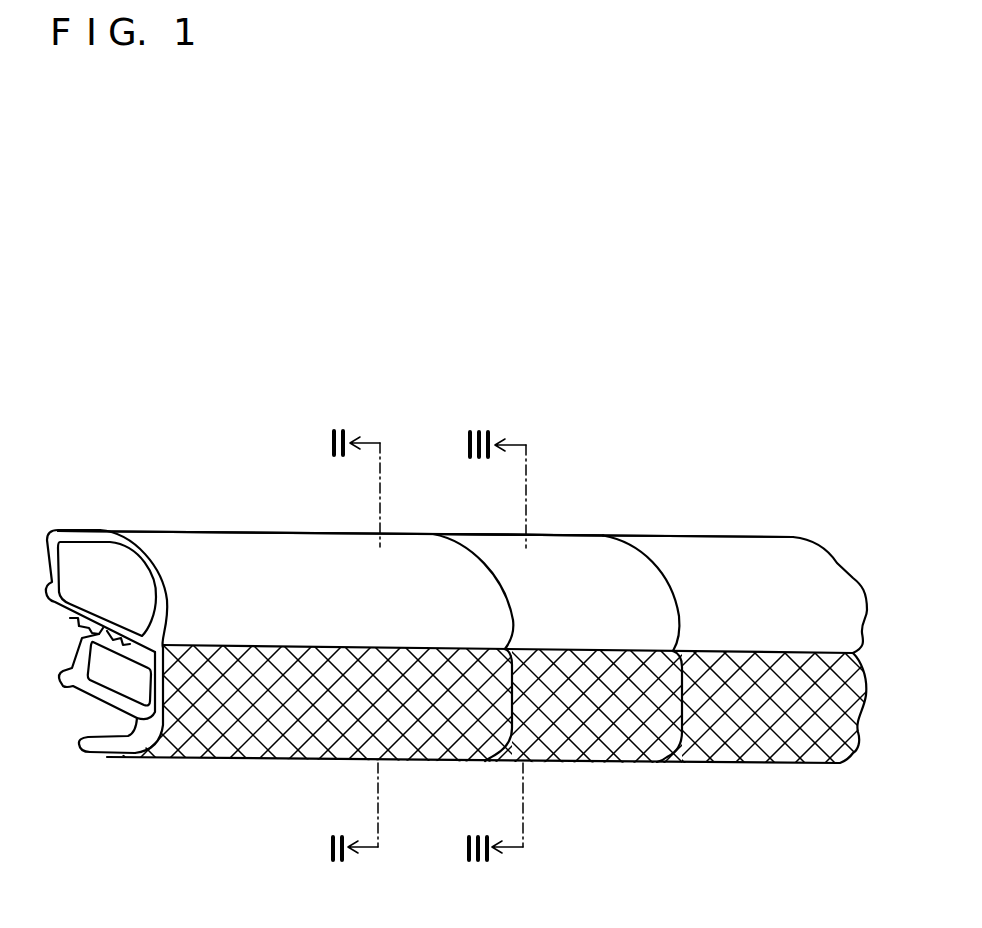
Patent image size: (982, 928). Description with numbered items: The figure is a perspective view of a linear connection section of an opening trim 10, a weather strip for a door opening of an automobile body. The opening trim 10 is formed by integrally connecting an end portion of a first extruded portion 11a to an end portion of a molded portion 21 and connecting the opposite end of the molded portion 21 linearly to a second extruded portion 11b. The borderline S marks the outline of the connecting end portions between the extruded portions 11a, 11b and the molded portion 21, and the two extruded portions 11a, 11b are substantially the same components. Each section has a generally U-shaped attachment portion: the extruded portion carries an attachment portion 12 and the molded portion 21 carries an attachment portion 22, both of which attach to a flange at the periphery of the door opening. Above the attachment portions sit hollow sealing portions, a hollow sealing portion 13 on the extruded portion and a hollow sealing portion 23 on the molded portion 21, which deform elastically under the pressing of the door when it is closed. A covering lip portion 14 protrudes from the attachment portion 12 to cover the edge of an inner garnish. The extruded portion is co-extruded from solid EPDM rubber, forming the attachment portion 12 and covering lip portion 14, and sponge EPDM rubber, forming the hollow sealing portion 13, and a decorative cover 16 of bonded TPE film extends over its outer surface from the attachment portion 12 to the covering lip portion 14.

The opening trim 10 is at (148, 482).
The first extruded portion 11a is at (207, 532).
The second extruded portion 11b is at (667, 535).
The attachment portion 12 is at (163, 695).
The hollow sealing portion 13 is at (277, 553).
The covering lip portion 14 is at (112, 747).
The decorative cover 16 is at (232, 737).
The molded portion 21 is at (460, 534).
The attachment portion 22 is at (600, 740).
The hollow sealing portion 23 is at (565, 557).
The borderline S is at (507, 612).